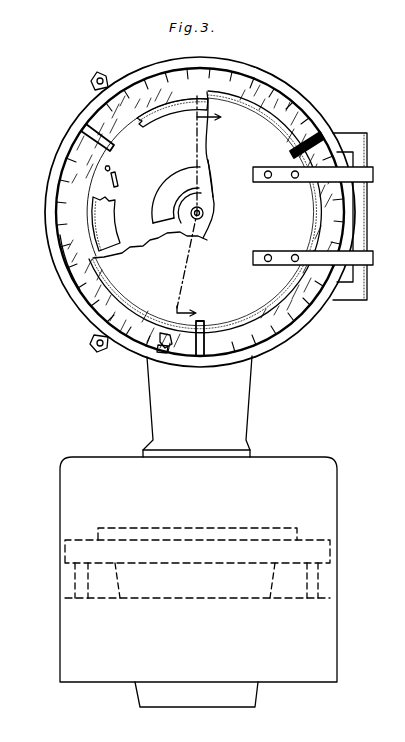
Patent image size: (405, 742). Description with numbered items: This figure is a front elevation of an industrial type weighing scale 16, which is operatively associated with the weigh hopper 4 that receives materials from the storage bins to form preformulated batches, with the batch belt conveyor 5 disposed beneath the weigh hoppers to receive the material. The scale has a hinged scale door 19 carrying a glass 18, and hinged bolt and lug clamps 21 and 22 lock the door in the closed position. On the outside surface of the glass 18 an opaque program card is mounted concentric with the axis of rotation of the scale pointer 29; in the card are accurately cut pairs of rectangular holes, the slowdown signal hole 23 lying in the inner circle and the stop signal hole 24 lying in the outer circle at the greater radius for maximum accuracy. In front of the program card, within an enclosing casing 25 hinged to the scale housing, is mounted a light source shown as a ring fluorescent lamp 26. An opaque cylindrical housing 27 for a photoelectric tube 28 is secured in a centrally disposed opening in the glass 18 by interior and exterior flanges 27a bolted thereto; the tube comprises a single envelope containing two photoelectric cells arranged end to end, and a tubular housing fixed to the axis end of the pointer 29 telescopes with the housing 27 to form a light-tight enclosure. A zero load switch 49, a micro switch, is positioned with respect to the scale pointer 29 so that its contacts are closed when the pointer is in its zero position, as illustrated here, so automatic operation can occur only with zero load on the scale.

The weigh hopper 4 is at (256, 527).
The batch belt conveyor 5 is at (205, 209).
The weighing scale 16 is at (296, 93).
The glass 18 is at (62, 152).
The hinged scale door 19 is at (68, 286).
The hinged bolt and lug clamp 21 is at (104, 73).
The hinged bolt and lug clamp 22 is at (105, 350).
The slowdown signal hole 23 is at (117, 184).
The stop signal hole 24 is at (112, 166).
The enclosing casing 25 is at (273, 303).
The ring fluorescent lamp 26 is at (172, 124).
The opaque cylindrical housing 27 is at (162, 225).
The interior and exterior flanges 27a is at (207, 178).
The photoelectric tube 28 is at (204, 213).
The scale pointer 29 is at (163, 336).
The zero load switch 49 is at (162, 353).